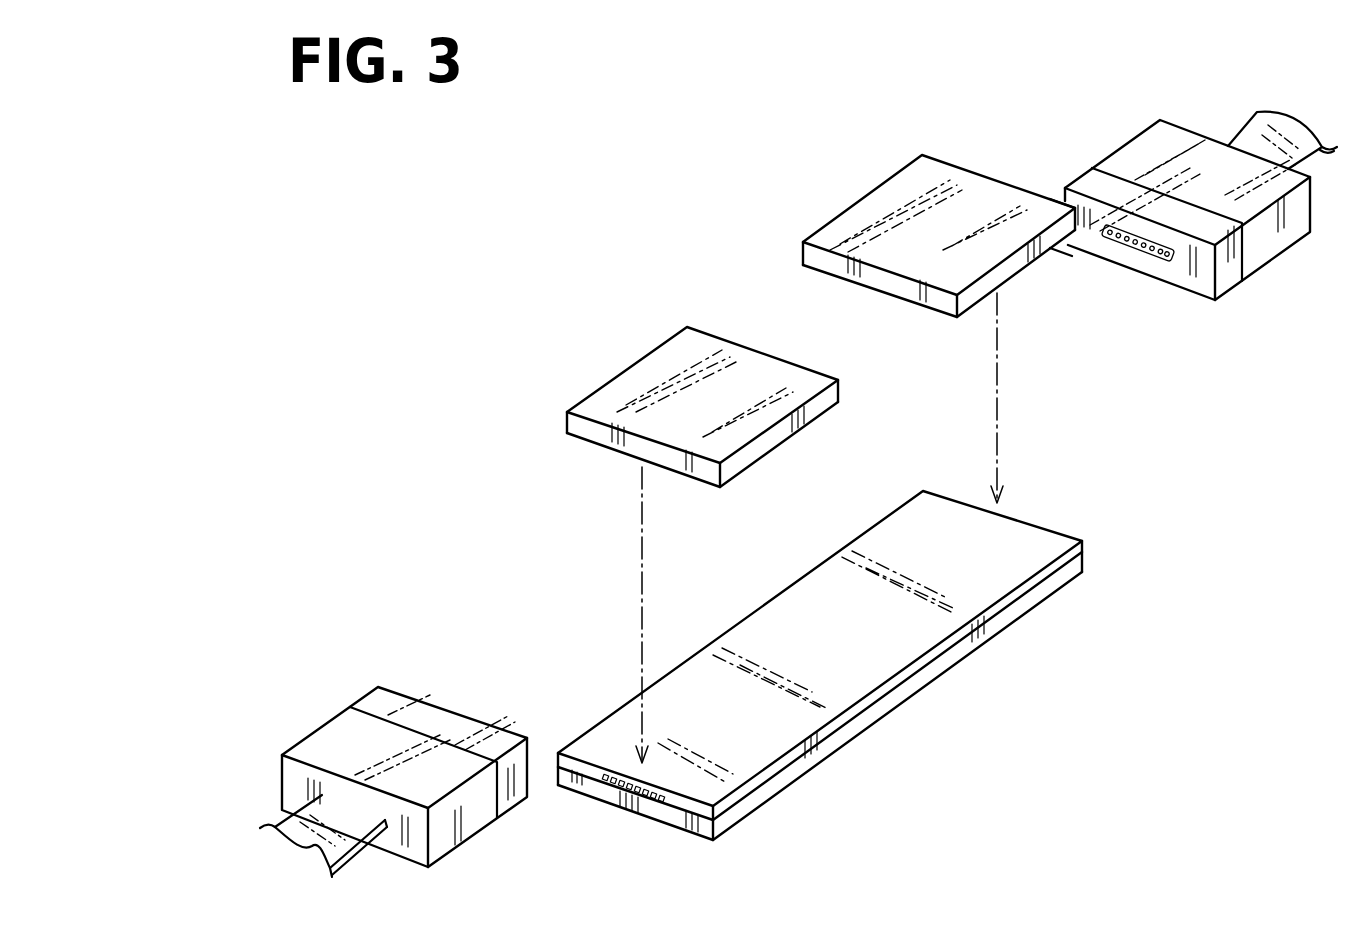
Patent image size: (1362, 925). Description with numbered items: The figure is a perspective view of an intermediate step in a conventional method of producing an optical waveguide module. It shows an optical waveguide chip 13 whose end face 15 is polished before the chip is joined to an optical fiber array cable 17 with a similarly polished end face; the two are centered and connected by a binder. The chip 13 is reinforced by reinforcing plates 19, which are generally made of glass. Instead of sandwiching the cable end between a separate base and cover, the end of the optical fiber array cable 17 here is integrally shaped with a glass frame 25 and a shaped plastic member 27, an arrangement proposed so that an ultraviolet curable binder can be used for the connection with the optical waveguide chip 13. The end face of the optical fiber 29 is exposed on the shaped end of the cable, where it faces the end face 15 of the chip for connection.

The optical waveguide chip 13 is at (918, 623).
The end face 15 is at (665, 805).
The optical fiber array cable 17 is at (1255, 143).
The reinforcing plate 19 is at (657, 378).
The glass frame 25 is at (1232, 270).
The shaped plastic member 27 is at (1263, 190).
The end face of the optical fiber 29 is at (1143, 256).